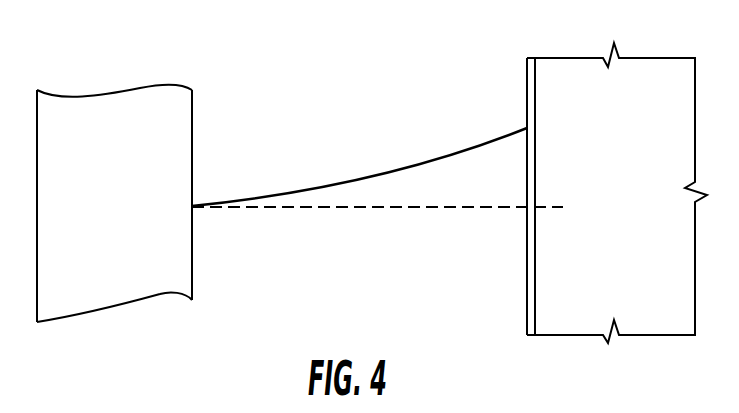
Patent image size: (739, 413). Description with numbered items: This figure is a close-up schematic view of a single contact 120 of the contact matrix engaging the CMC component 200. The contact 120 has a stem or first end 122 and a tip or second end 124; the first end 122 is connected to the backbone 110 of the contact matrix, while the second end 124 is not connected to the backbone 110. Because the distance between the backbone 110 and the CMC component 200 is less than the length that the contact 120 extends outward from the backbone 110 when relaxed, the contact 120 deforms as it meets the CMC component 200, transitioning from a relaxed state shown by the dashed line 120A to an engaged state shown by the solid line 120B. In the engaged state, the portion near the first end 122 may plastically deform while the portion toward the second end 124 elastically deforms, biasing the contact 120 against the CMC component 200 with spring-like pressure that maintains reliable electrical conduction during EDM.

The backbone 110 is at (83, 97).
The contact 120 is at (321, 163).
The relaxed state 120A is at (417, 208).
The engaged state 120B is at (432, 162).
The first end 122 is at (214, 172).
The second end 124 is at (500, 111).
The CMC component 200 is at (633, 152).